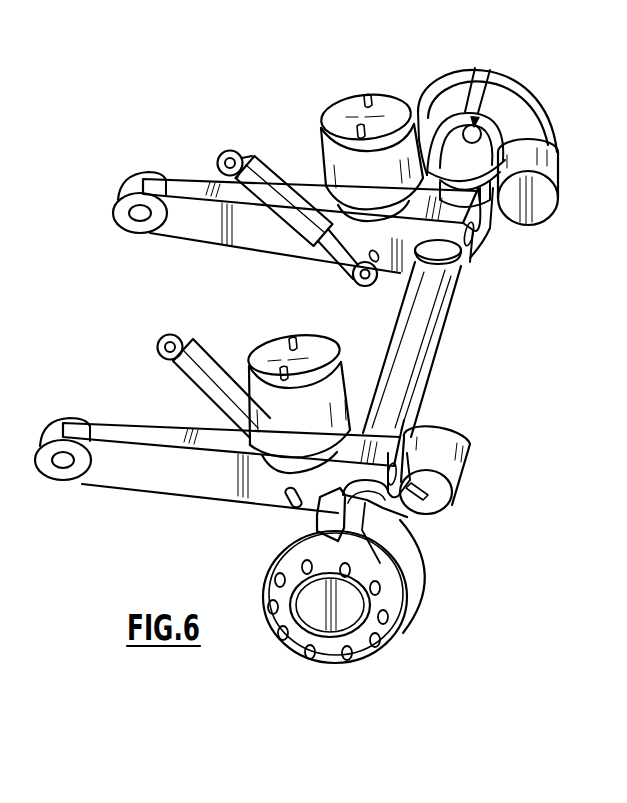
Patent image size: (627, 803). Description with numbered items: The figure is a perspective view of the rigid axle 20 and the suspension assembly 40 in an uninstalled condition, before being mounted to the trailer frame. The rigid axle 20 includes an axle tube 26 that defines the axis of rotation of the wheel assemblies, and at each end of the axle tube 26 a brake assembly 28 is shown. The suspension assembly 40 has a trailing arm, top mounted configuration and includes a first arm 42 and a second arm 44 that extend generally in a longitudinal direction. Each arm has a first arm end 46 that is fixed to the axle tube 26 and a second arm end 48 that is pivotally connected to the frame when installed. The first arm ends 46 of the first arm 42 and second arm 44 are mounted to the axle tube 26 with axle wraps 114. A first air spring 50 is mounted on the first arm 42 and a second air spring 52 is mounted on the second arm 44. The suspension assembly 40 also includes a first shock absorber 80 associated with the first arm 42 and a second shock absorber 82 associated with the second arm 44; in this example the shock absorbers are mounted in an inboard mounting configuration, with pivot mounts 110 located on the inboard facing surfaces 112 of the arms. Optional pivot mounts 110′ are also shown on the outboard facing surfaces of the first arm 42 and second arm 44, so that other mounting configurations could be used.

The rigid axle 20 is at (480, 359).
The axle tube 26 is at (440, 311).
The brake assembly 28 is at (497, 69).
The suspension assembly 40 is at (156, 251).
The first arm 42 is at (190, 187).
The second arm 44 is at (163, 480).
The first arm end 46 is at (462, 203).
The second arm end 48 is at (128, 186).
The first air spring 50 is at (410, 130).
The second air spring 52 is at (341, 357).
The first shock absorber 80 is at (271, 172).
The second shock absorber 82 is at (200, 357).
The pivot mount 110 is at (368, 286).
The optional pivot mount 110′ is at (287, 509).
The inboard facing surface 112 is at (268, 238).
The axle wrap 114 is at (460, 268).